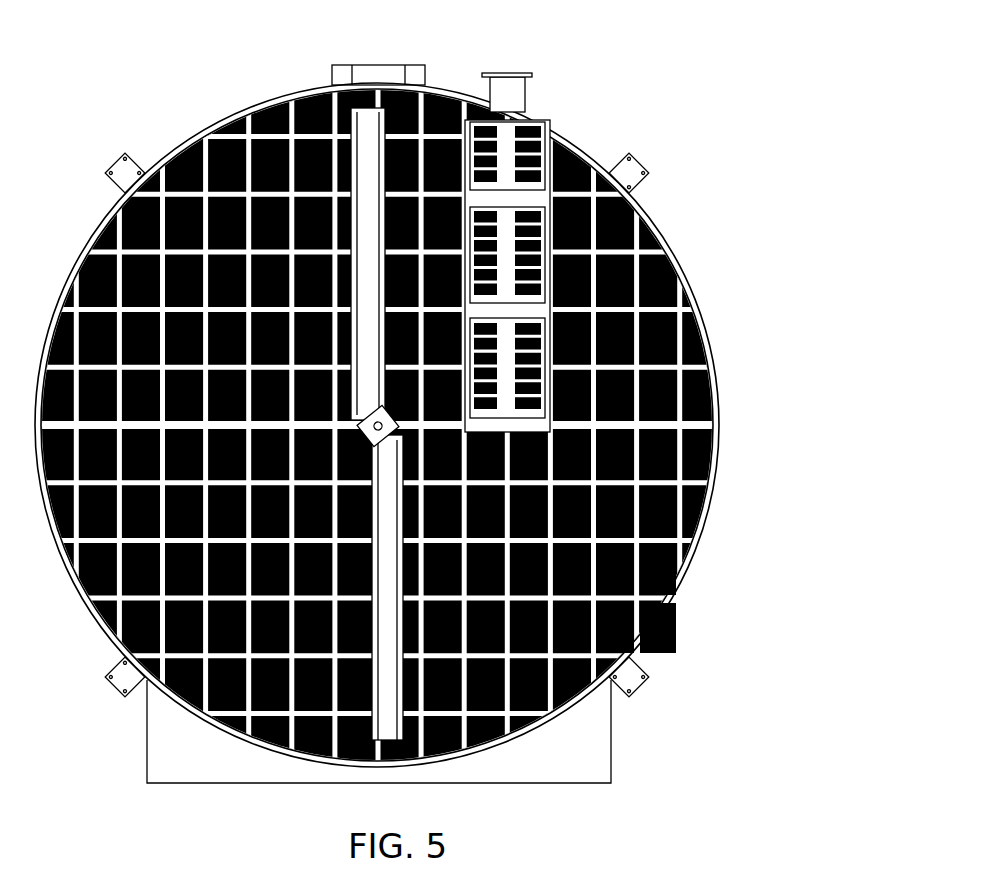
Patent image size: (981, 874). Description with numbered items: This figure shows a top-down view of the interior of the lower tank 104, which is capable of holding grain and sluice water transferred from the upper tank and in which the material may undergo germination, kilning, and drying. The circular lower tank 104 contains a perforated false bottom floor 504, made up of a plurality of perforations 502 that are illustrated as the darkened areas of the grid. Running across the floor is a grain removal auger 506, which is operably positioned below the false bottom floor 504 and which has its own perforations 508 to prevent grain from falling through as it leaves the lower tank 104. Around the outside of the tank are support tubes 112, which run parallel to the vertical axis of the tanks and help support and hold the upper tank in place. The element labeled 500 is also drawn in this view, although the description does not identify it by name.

The lower tank 104 is at (677, 252).
The support tubes 112 is at (640, 162).
The lever arm 500 is at (365, 137).
The perforations 502 is at (690, 558).
The false bottom floor 504 is at (713, 402).
The grain removal auger 506 is at (515, 85).
The perforations 508 is at (542, 125).